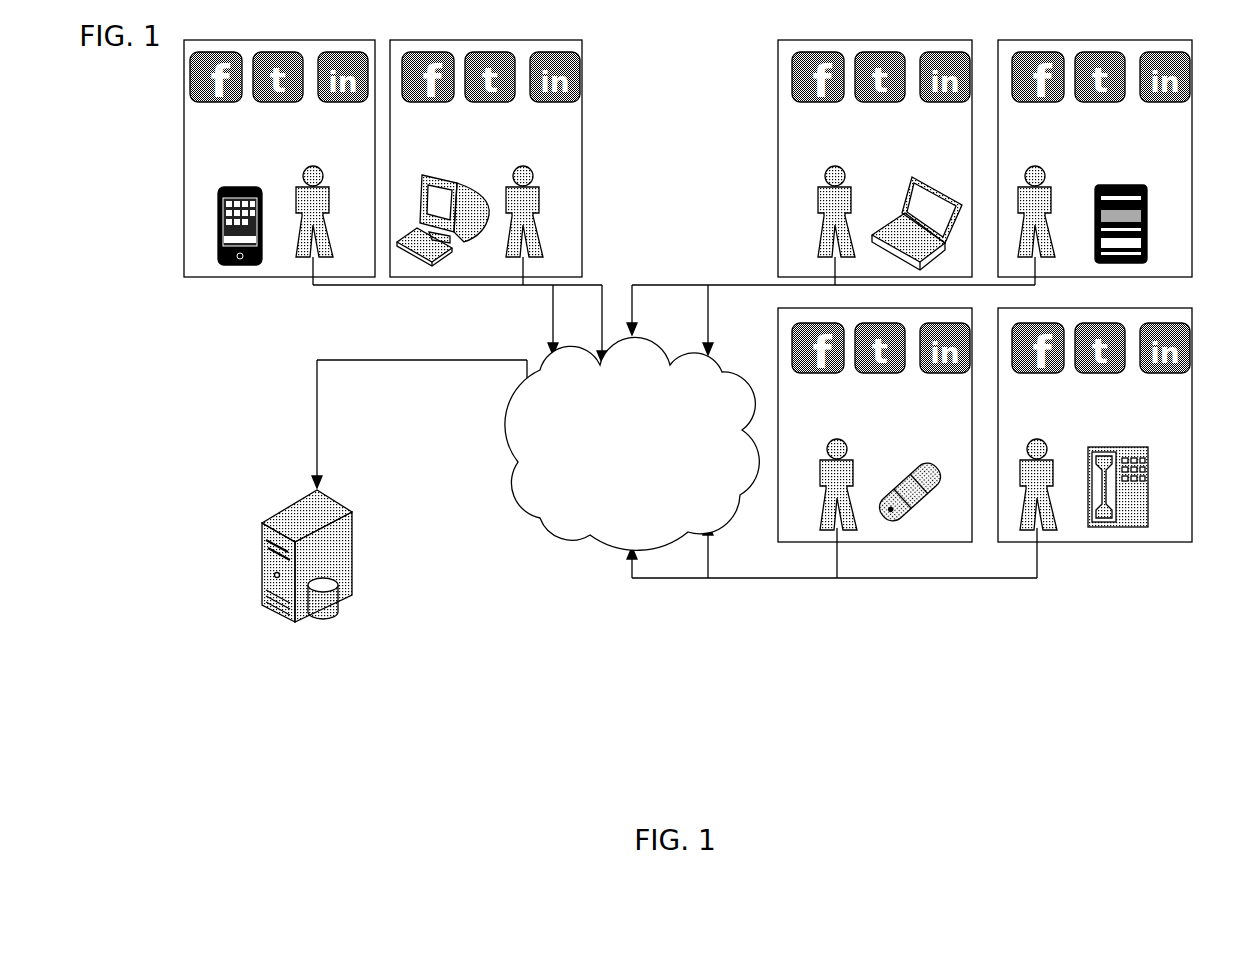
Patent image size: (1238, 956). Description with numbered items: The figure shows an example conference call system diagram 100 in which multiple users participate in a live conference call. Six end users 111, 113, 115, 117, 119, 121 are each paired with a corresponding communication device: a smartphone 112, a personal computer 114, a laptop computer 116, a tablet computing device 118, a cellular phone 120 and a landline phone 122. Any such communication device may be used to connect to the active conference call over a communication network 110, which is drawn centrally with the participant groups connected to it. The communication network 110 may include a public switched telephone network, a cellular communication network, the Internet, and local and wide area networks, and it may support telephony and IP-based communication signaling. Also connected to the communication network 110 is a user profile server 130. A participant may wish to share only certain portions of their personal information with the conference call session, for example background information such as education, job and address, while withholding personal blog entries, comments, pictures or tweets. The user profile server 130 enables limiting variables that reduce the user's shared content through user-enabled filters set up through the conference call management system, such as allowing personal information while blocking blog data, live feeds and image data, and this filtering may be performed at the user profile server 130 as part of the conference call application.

The conference call system diagram 100 is at (101, 49).
The communication network 110 is at (632, 443).
The end user 111 is at (314, 201).
The smartphone 112 is at (240, 205).
The end user 113 is at (522, 201).
The personal computer 114 is at (443, 206).
The end user 115 is at (834, 201).
The laptop computer 116 is at (917, 208).
The end user 117 is at (1037, 201).
The tablet computing device 118 is at (1121, 204).
The end user 119 is at (834, 475).
The cellular phone 120 is at (910, 473).
The end user 121 is at (1037, 475).
The landline phone 122 is at (1118, 474).
The user profile server 130 is at (305, 596).